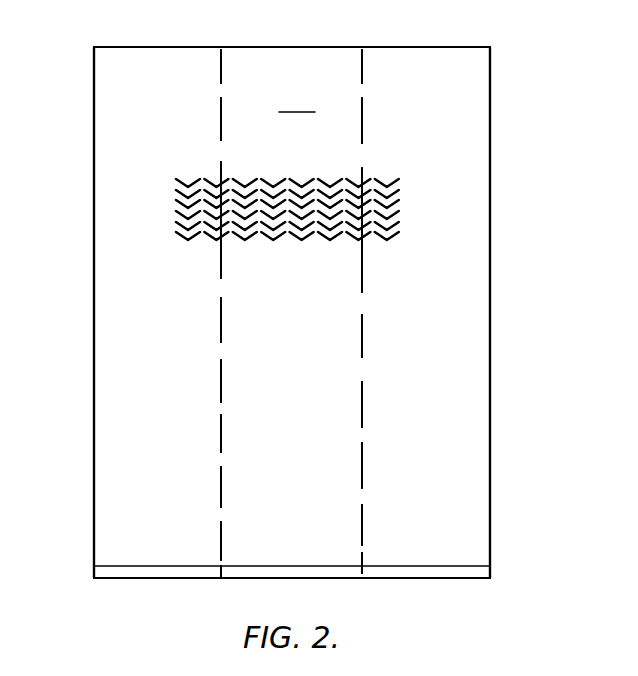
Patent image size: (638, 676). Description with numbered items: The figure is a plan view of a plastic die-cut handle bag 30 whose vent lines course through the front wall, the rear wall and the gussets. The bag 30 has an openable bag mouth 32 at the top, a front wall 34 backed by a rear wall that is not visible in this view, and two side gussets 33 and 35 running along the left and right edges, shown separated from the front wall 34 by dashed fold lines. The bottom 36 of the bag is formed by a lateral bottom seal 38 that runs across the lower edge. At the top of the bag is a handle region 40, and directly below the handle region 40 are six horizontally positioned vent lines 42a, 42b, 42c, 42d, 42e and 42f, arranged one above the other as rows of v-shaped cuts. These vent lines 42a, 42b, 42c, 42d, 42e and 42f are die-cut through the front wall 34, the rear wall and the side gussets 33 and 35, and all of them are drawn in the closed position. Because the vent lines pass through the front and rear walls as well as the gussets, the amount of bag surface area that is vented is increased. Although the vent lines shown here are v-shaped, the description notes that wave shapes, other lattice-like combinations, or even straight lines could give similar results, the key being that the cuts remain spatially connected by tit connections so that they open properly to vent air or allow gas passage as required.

The plastic bag 30 is at (490, 380).
The openable bag mouth 32 is at (418, 47).
The side gusset 33 is at (122, 362).
The front wall 34 is at (322, 64).
The side gusset 35 is at (450, 330).
The bottom 36 is at (175, 580).
The lateral bottom seal 38 is at (283, 566).
The handle region 40 is at (297, 98).
The vent line 42a is at (178, 184).
The vent line 42b is at (178, 194).
The vent line 42c is at (178, 205).
The vent line 42d is at (178, 215).
The vent line 42e is at (178, 226).
The vent line 42f is at (178, 237).